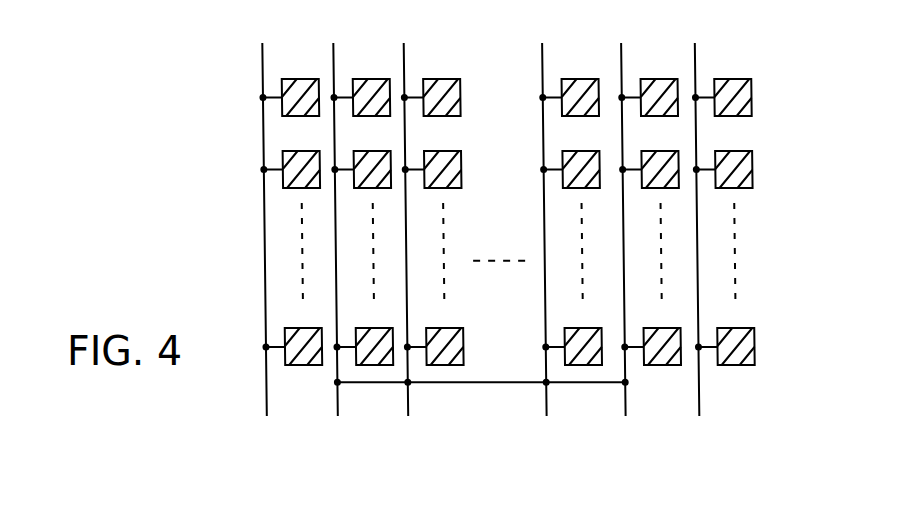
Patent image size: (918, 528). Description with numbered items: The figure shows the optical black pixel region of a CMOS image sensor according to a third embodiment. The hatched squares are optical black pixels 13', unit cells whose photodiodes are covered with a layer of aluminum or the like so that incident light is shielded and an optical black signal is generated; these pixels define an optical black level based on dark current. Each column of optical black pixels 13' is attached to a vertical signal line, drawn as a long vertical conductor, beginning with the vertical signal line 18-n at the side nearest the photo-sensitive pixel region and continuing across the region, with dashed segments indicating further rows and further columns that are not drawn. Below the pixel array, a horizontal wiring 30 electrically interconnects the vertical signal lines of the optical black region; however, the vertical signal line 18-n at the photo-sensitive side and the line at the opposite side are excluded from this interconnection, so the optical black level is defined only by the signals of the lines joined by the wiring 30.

The optical black pixel 13' is at (302, 70).
The vertical signal line 18-n is at (262, 255).
The wiring 30 is at (502, 382).